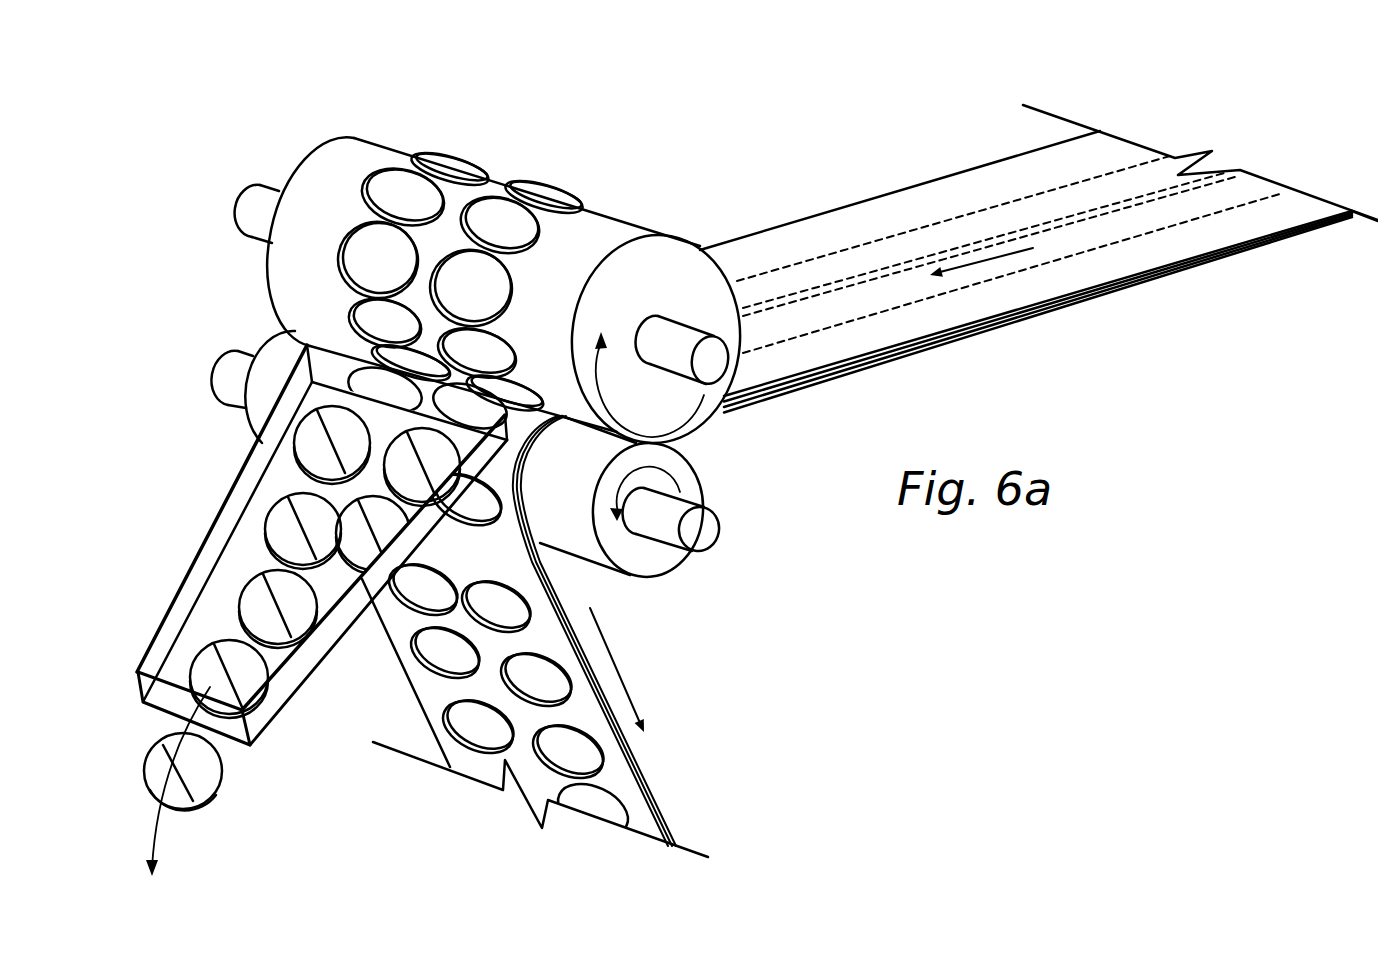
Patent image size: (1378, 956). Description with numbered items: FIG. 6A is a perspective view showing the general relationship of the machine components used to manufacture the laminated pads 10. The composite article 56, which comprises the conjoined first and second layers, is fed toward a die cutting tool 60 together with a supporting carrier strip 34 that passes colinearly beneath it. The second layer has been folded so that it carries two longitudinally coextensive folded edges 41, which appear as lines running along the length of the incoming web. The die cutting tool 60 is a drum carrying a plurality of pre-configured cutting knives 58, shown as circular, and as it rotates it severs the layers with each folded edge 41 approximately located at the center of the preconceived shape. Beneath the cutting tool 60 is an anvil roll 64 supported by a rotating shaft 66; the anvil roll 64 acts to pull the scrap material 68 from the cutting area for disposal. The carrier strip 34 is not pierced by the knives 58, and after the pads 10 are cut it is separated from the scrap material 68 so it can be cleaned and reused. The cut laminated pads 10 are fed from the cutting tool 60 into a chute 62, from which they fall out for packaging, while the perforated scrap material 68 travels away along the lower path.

The laminated pad 10 is at (233, 650).
The supporting carrier strip 34 is at (1147, 278).
The folded edges 41 is at (987, 208).
The composite article 56 is at (843, 207).
The cutting knives 58 is at (468, 160).
The die cutting tool 60 is at (618, 230).
The chute 62 is at (243, 505).
The anvil roll 64 is at (580, 544).
The rotating shaft 66 is at (706, 523).
The scrap material 68 is at (611, 788).